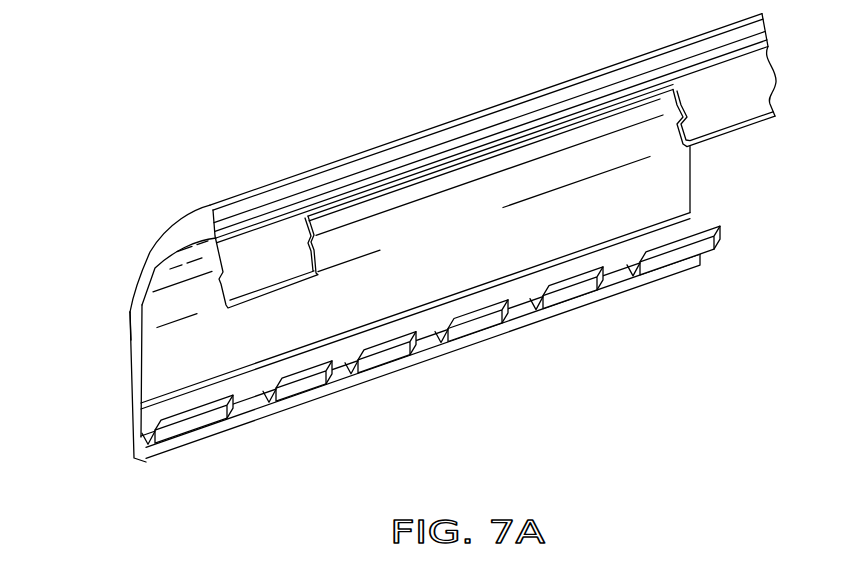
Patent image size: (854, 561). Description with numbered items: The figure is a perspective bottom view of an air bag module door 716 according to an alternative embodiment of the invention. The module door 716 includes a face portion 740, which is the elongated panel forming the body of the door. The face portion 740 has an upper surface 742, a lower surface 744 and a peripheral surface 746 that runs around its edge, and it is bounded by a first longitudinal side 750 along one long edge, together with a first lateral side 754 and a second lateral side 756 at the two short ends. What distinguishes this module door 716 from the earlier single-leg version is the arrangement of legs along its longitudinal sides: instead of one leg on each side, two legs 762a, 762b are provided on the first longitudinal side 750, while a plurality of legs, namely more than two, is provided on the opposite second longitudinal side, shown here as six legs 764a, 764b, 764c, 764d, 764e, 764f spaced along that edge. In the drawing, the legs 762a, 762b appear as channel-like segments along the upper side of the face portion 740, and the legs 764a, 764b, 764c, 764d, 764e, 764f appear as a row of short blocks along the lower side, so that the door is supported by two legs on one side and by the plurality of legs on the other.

The air bag module door 716 is at (148, 250).
The face portion 740 is at (496, 237).
The upper surface 742 is at (212, 207).
The lower surface 744 is at (527, 157).
The peripheral surface 746 is at (353, 184).
The first longitudinal side 750 is at (432, 137).
The first lateral side 754 is at (128, 323).
The second lateral side 756 is at (692, 187).
The leg 762a is at (292, 271).
The leg 762b is at (753, 108).
The leg 764a is at (193, 432).
The leg 764b is at (291, 393).
The leg 764c is at (387, 364).
The leg 764d is at (488, 333).
The leg 764e is at (577, 299).
The leg 764f is at (671, 264).